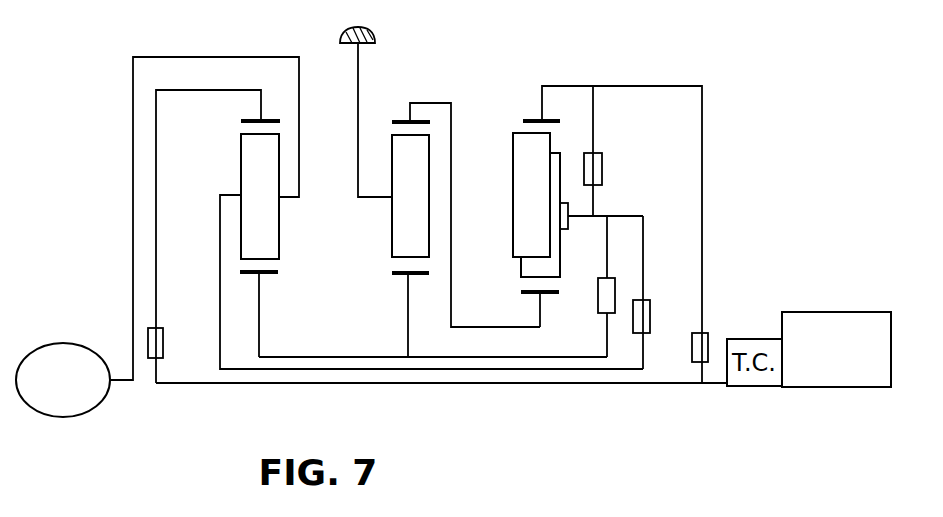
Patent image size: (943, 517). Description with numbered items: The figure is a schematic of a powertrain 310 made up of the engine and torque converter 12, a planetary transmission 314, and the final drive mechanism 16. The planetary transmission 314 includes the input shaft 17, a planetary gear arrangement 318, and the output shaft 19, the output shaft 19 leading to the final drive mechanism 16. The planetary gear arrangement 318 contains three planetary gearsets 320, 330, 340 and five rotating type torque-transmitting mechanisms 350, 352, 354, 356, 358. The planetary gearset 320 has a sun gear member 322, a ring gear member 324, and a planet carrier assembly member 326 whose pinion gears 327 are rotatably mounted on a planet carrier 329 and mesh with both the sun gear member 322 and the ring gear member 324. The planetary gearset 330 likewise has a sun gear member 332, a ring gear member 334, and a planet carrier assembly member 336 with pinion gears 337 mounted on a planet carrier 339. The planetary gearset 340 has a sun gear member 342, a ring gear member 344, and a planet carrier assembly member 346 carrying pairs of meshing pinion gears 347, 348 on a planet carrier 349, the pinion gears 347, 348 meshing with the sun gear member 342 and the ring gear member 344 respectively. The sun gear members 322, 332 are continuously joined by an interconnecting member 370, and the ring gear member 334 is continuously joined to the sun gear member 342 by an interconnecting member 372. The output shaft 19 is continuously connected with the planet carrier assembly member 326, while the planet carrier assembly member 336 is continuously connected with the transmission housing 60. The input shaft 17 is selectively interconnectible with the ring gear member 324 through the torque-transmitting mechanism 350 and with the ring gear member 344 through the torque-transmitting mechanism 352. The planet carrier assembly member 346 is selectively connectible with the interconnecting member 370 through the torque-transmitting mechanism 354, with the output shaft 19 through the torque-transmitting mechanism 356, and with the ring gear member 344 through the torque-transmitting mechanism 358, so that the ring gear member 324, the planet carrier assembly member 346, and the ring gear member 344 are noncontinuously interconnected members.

The engine and torque converter 12 is at (840, 309).
The final drive mechanism 16 is at (92, 346).
The input shaft 17 is at (710, 383).
The output shaft 19 is at (125, 380).
The transmission housing 60 is at (373, 35).
The powertrain 310 is at (734, 145).
The planetary transmission 314 is at (449, 41).
The planetary gear arrangement 318 is at (337, 337).
The planetary gearset 320 is at (234, 247).
The sun gear member 322 is at (260, 275).
The ring gear member 324 is at (250, 118).
The planet carrier assembly member 326 is at (240, 133).
The pinion gears 327 is at (249, 168).
The planet carrier 329 is at (296, 195).
The planetary gearset 330 is at (382, 262).
The sun gear member 332 is at (415, 276).
The ring gear member 334 is at (400, 121).
The planet carrier assembly member 336 is at (390, 134).
The pinion gears 337 is at (398, 175).
The planet carrier 339 is at (368, 198).
The planetary gearset 340 is at (516, 299).
The sun gear member 342 is at (548, 294).
The ring gear member 344 is at (549, 121).
The planet carrier assembly member 346 is at (511, 132).
The pinion gears 347 is at (556, 158).
The pinion gears 348 is at (514, 224).
The planet carrier 349 is at (563, 220).
The torque-transmitting mechanism 350 is at (166, 354).
The torque-transmitting mechanism 352 is at (691, 342).
The torque-transmitting mechanism 354 is at (620, 275).
The torque-transmitting mechanism 356 is at (652, 301).
The torque-transmitting mechanism 358 is at (604, 168).
The interconnecting member 370 is at (290, 357).
The interconnecting member 372 is at (432, 103).